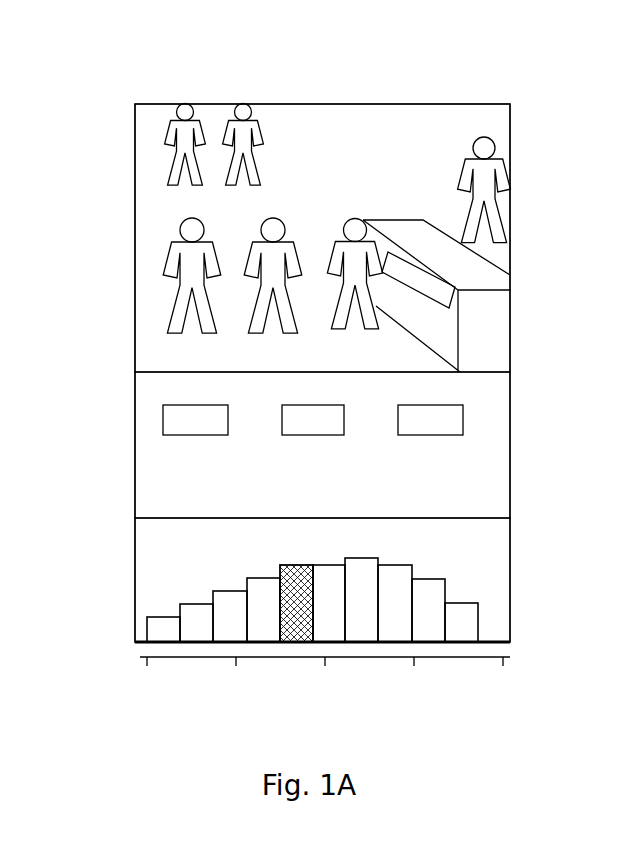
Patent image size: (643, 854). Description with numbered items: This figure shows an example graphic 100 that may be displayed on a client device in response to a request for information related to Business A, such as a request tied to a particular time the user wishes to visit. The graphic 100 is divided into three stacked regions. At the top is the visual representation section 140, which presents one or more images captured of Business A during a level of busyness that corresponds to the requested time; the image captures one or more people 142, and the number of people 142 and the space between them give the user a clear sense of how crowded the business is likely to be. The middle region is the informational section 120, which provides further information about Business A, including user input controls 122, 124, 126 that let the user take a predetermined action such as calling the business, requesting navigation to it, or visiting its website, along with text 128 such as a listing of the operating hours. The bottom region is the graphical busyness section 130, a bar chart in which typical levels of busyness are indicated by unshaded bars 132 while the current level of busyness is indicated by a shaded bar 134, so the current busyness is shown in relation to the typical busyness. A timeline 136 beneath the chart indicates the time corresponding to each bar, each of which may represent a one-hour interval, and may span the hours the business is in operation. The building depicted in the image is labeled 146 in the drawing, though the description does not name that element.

The graphic 100 is at (58, 74).
The informational section 120 is at (497, 472).
The user input control 122 is at (163, 419).
The user input control 124 is at (312, 435).
The user input control 126 is at (425, 435).
The text 128 is at (153, 490).
The graphical busyness section 130 is at (470, 567).
The unshaded bars 132 is at (478, 620).
The shaded bar 134 is at (312, 616).
The timeline 136 is at (505, 657).
The visual representation section 140 is at (135, 212).
The people 142 is at (480, 180).
The business building 146 is at (478, 303).